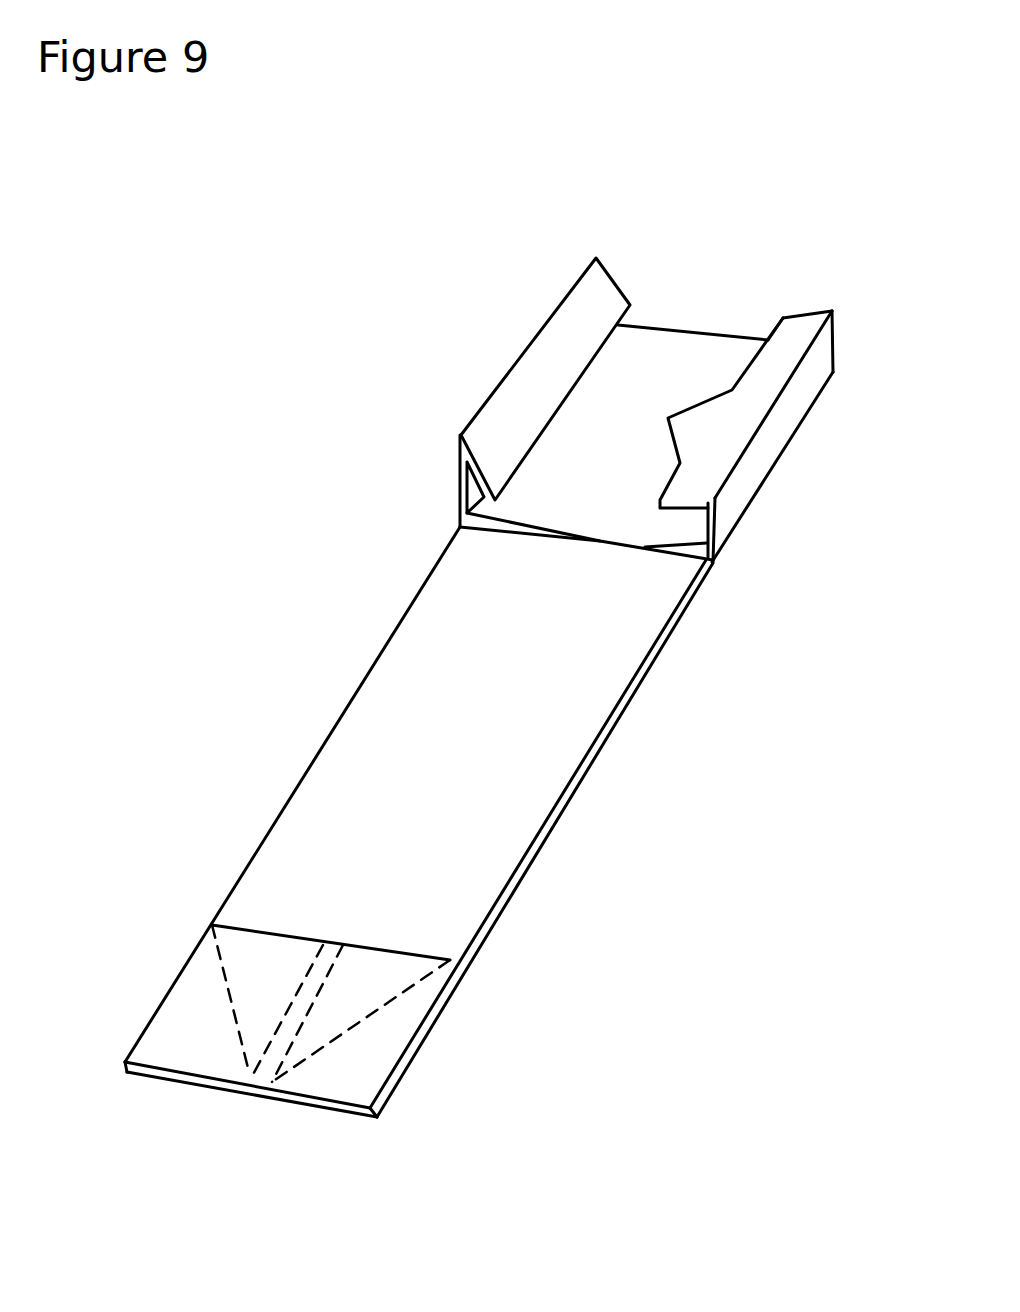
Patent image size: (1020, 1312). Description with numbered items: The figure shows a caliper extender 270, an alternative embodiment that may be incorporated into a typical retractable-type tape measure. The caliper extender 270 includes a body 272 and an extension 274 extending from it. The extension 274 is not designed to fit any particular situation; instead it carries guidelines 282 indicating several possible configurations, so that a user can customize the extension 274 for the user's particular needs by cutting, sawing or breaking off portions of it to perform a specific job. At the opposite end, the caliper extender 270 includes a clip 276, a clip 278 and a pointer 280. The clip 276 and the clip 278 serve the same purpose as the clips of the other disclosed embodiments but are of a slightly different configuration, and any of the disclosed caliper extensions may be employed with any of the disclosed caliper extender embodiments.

The caliper extender 270 is at (580, 203).
The body 272 is at (430, 811).
The extension 274 is at (177, 970).
The clip 276 is at (795, 335).
The clip 278 is at (538, 383).
The pointer 280 is at (695, 423).
The guidelines 282 is at (288, 1017).